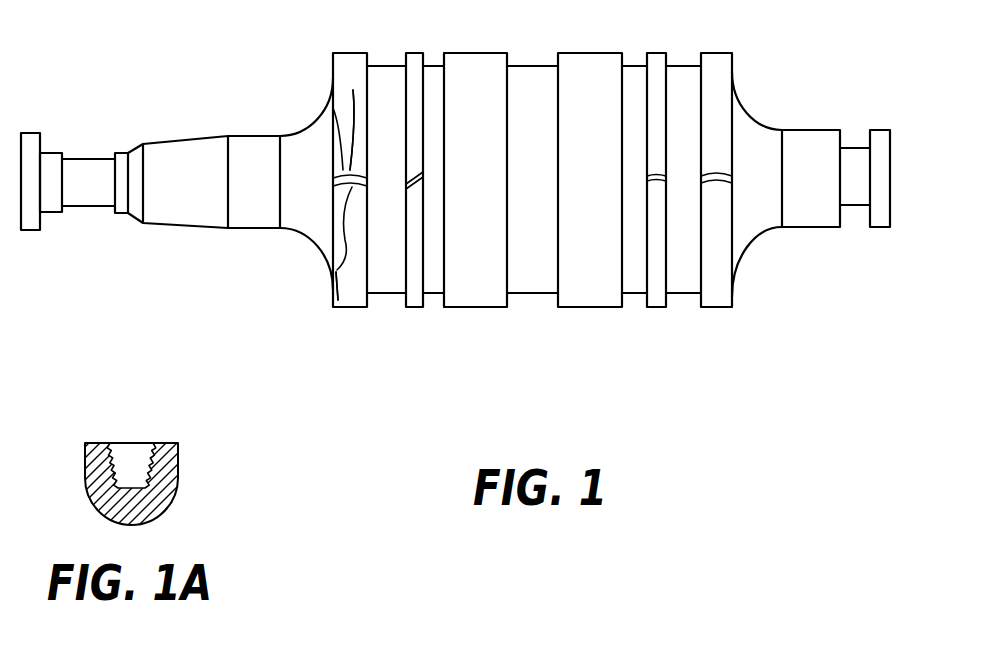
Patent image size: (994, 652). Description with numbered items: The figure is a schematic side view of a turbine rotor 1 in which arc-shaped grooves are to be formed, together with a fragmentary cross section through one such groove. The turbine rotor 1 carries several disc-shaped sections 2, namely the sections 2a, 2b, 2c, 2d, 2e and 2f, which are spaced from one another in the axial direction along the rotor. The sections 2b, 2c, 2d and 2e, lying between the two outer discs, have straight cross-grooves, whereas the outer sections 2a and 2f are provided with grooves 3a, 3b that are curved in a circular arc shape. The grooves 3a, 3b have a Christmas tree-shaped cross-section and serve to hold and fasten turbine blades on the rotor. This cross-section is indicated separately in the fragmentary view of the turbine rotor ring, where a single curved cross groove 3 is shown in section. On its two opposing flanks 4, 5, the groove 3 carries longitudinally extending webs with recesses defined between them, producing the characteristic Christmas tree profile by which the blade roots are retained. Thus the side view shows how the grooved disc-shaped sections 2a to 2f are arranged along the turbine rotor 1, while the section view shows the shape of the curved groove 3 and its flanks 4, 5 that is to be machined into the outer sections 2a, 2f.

In FIG. 1, the turbine rotor 1 is at (455, 187).
In FIG. 1, the disc-shaped sections 2 is at (530, 85).
In FIG. 1, the disc-shaped section 2a is at (322, 213).
In FIG. 1, the disc-shaped section 2b is at (415, 300).
In FIG. 1, the disc-shaped section 2c is at (493, 300).
In FIG. 1, the disc-shaped section 2d is at (613, 300).
In FIG. 1, the disc-shaped section 2e is at (658, 300).
In FIG. 1, the disc-shaped section 2f is at (754, 213).
In FIG. 1A, the groove 3 is at (135, 470).
In FIG. 1, the groove 3a is at (333, 108).
In FIG. 1, the groove 3b is at (713, 168).
In FIG. 1, the flank 4 is at (353, 90).
In FIG. 1A, the flank 4 is at (97, 468).
In FIG. 1, the flank 5 is at (333, 270).
In FIG. 1A, the flank 5 is at (172, 485).